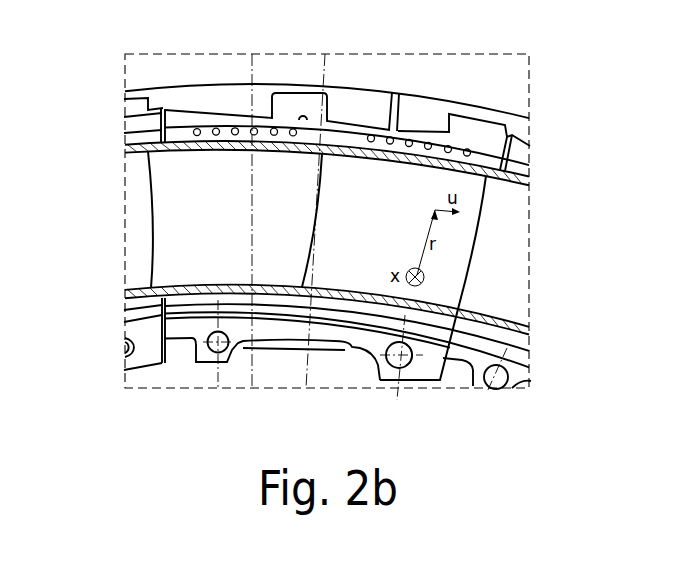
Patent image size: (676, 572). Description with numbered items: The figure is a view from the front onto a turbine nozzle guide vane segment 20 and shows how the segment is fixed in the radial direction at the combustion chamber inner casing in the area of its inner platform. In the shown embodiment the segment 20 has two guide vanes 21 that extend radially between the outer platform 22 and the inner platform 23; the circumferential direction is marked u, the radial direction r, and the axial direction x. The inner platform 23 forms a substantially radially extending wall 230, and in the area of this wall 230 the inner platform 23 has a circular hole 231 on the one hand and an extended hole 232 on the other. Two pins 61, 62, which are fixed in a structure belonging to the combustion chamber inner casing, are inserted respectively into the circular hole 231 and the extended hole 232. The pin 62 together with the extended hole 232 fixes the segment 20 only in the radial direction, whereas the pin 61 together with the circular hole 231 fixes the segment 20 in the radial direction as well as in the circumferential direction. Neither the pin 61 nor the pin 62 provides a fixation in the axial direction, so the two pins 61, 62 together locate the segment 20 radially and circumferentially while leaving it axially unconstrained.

The turbine nozzle guide vane segment 20 is at (488, 275).
The guide vane 21 is at (187, 208).
The outer platform 22 is at (358, 106).
The inner platform 23 is at (327, 290).
The wall 230 is at (268, 350).
The circular hole 231 is at (234, 364).
The extended hole 232 is at (373, 370).
The pin 61 is at (209, 366).
The pin 62 is at (392, 368).